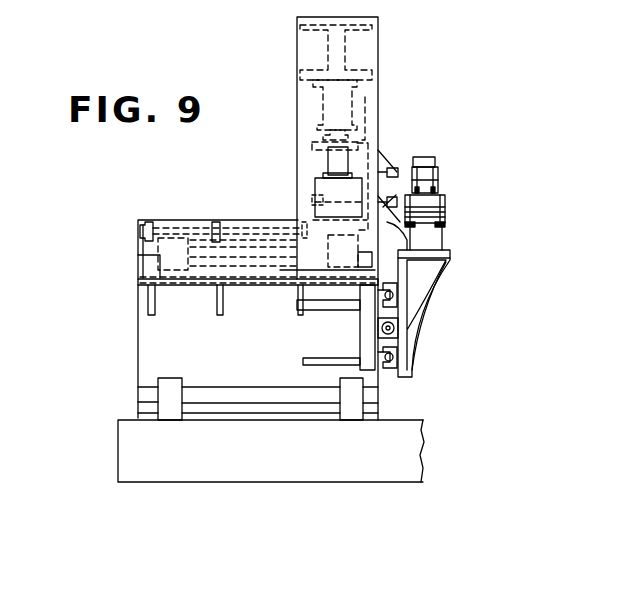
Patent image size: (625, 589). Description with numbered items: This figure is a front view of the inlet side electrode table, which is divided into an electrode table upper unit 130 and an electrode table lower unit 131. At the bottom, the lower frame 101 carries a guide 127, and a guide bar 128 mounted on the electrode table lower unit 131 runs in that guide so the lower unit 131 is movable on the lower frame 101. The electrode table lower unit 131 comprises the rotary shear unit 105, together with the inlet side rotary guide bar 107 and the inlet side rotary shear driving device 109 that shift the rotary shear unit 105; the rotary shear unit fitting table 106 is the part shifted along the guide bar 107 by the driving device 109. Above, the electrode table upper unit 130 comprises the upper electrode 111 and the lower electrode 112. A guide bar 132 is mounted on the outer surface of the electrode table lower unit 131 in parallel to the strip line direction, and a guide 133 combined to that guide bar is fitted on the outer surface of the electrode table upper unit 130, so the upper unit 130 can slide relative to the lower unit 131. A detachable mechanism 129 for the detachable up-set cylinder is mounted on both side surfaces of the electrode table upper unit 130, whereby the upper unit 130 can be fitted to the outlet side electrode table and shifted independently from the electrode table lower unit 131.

The lower frame 101 is at (308, 482).
The rotary shear unit 105 is at (505, 158).
The rotary shear unit fitting table 106 is at (441, 290).
The inlet side rotary guide bar 107 is at (388, 368).
The inlet side rotary shear driving device 109 is at (400, 327).
The upper electrode 111 is at (380, 160).
The lower electrode 112 is at (405, 243).
The guide 127 is at (350, 405).
The guide bar 128 is at (257, 413).
The detachable mechanism 129 is at (313, 182).
The electrode table upper unit 130 is at (190, 202).
The electrode table lower unit 131 is at (138, 350).
The guide bar 132 is at (238, 252).
The guide 133 is at (160, 255).